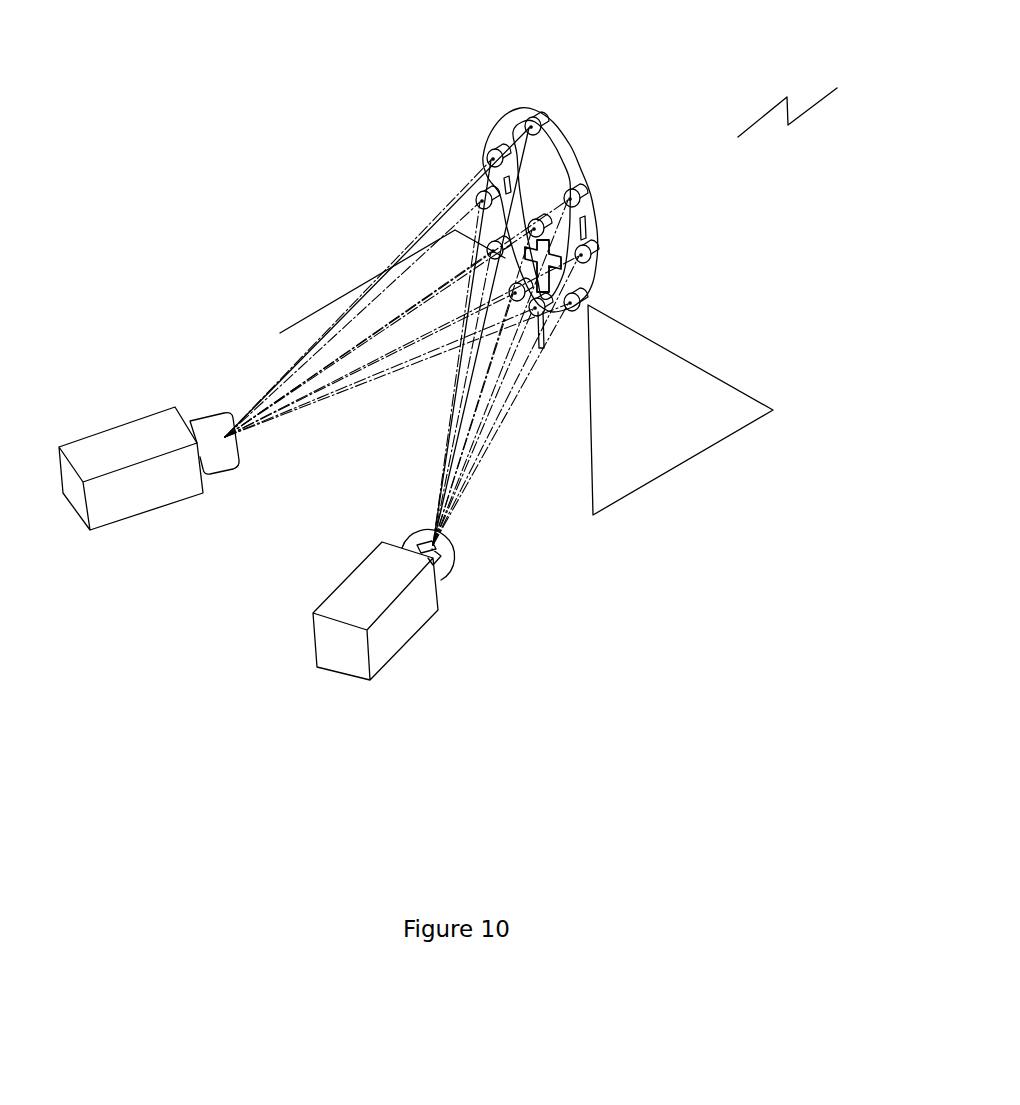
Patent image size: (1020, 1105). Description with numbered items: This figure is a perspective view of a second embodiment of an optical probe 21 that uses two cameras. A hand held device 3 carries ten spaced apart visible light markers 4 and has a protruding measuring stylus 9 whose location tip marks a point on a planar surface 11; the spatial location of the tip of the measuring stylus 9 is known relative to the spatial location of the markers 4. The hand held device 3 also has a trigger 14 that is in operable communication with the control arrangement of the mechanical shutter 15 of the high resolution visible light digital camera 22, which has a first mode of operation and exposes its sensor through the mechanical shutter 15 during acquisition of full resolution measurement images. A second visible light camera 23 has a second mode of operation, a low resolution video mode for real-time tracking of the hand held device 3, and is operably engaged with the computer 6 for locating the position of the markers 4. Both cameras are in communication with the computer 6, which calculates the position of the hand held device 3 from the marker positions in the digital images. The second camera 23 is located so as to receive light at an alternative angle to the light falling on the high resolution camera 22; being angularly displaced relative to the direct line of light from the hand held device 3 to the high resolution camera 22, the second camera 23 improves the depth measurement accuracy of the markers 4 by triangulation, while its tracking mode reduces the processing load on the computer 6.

The hand held device 3 is at (578, 196).
The markers 4 is at (536, 122).
The computer 6 is at (103, 513).
The measuring stylus 9 is at (548, 337).
The planar surface 11 is at (670, 410).
The trigger 14 is at (544, 237).
The mechanical shutter 15 is at (435, 565).
The optical probe 21 is at (806, 104).
The high resolution visible light digital camera 22 is at (443, 550).
The second visible light camera 23 is at (207, 423).